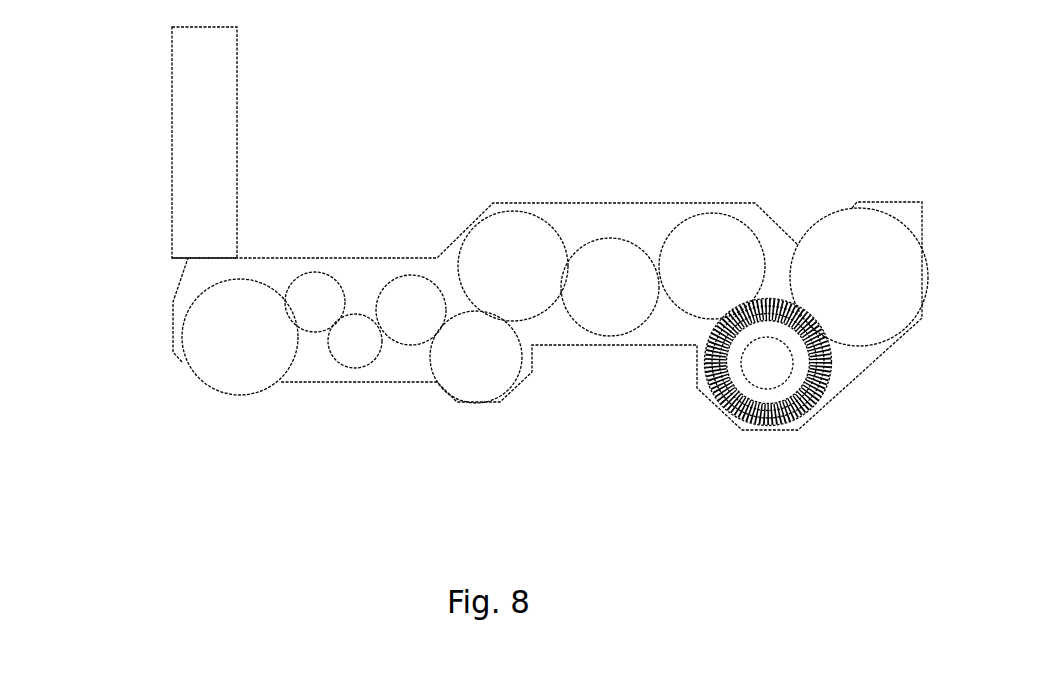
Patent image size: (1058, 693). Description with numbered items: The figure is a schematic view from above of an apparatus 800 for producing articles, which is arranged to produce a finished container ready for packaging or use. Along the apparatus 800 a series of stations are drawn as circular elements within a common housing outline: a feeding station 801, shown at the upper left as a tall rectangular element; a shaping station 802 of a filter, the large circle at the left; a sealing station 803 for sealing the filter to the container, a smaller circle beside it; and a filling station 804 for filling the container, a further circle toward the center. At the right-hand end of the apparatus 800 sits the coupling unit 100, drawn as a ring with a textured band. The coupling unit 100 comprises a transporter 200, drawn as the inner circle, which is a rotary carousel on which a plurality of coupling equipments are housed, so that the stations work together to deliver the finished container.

The apparatus for producing articles 800 is at (586, 229).
The feeding station 801 is at (200, 131).
The shaping station 802 is at (211, 347).
The sealing station 803 is at (347, 348).
The filling station 804 is at (484, 360).
The coupling unit 100 is at (780, 297).
The transporter 200 is at (796, 344).